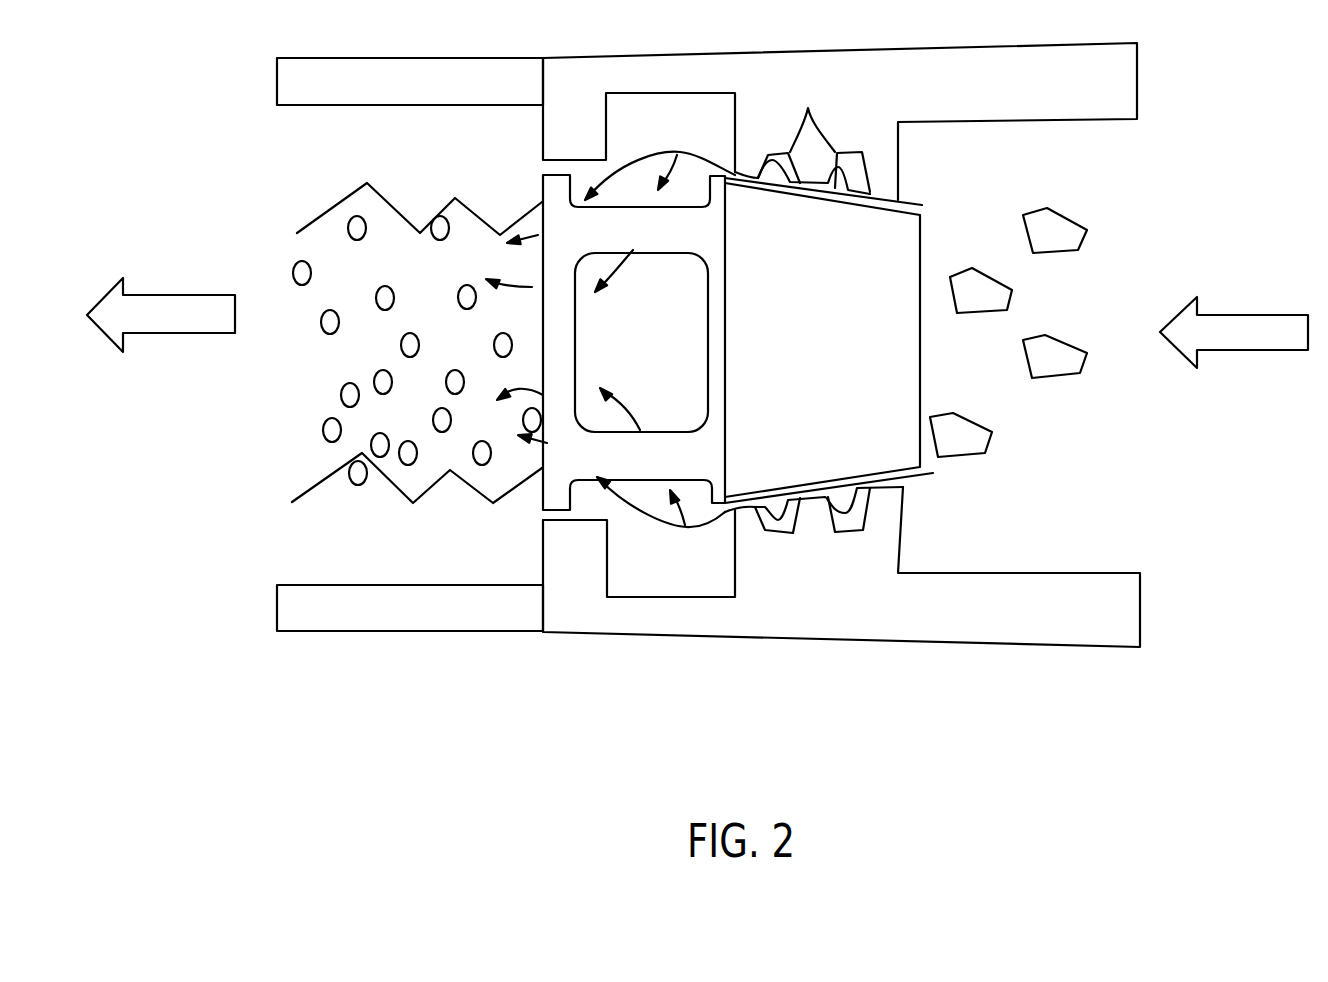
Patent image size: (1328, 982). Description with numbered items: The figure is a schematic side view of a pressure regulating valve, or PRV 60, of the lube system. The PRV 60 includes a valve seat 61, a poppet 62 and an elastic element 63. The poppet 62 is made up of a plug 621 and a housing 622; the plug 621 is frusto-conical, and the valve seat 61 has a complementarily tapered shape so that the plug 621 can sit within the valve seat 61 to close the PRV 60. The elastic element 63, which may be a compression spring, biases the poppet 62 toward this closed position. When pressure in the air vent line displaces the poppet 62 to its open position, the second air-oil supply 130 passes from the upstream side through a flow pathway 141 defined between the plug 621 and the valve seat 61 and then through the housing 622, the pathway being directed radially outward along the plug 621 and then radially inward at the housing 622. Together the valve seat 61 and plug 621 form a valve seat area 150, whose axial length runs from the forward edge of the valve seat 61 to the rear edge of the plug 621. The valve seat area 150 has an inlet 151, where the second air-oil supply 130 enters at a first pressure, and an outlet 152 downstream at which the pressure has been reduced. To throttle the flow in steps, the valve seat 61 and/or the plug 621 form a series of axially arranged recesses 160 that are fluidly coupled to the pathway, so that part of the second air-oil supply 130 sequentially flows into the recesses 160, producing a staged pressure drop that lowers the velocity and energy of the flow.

The pressure regulating valve 60 is at (708, 382).
The valve seat 61 is at (803, 592).
The poppet 62 is at (738, 358).
The elastic element 63 is at (332, 477).
The second air-oil supply 130 is at (1247, 340).
The flow pathway 141 is at (908, 482).
The valve seat area 150 is at (813, 406).
The inlet 151 is at (941, 489).
The outlet 152 is at (712, 525).
The axially arranged recesses 160 is at (808, 107).
The plug 621 is at (829, 360).
The housing 622 is at (646, 245).